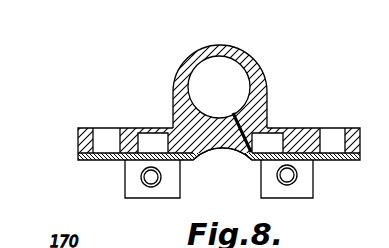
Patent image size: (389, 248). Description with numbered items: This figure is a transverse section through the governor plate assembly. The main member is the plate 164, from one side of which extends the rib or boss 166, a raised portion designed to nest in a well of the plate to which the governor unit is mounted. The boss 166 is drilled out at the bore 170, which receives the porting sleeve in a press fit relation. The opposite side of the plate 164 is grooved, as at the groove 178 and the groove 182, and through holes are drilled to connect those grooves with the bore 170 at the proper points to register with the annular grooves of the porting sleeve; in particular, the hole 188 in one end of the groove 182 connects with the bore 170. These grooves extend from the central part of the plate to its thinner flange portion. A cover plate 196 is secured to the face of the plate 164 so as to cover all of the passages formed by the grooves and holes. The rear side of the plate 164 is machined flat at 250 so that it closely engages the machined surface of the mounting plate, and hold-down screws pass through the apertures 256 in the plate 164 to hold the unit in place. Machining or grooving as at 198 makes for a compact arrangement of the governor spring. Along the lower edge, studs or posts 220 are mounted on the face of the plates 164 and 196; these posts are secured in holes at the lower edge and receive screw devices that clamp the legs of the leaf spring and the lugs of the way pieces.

The rib or boss 166 is at (258, 63).
The bore 170 is at (198, 68).
The hole 188 is at (264, 114).
The cover plate 196 is at (85, 161).
The plate 164 is at (86, 126).
The apertures 256 is at (108, 128).
The groove 178 is at (152, 143).
The groove 182 is at (274, 143).
The machined flat surface 250 is at (310, 126).
The machining or grooving 198 is at (229, 152).
The studs or posts 220 is at (127, 181).